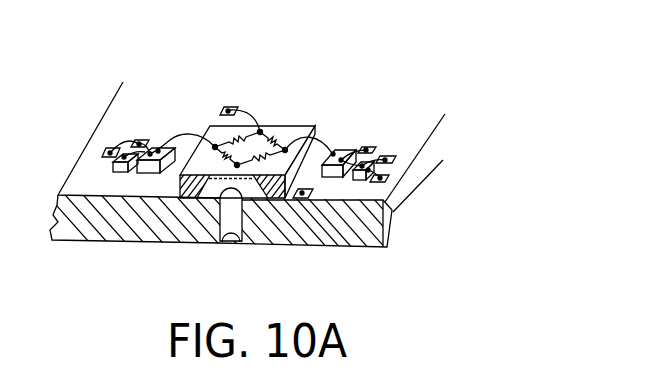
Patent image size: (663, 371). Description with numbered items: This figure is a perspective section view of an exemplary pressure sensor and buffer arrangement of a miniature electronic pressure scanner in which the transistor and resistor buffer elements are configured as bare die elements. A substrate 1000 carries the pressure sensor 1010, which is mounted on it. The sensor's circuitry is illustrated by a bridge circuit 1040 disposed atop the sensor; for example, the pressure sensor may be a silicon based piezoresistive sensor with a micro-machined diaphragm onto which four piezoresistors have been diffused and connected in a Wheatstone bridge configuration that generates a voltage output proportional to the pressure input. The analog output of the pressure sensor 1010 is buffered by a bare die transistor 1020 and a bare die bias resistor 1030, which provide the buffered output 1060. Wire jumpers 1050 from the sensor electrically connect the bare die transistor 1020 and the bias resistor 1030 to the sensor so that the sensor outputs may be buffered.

The substrate 1000 is at (320, 247).
The pressure sensor 1010 is at (277, 124).
The bare die transistor 1020 is at (350, 142).
The bare die bias resistor 1030 is at (386, 160).
The bridge circuit 1040 is at (216, 145).
The wire jumpers 1050 is at (322, 128).
The buffered output 1060 is at (381, 178).